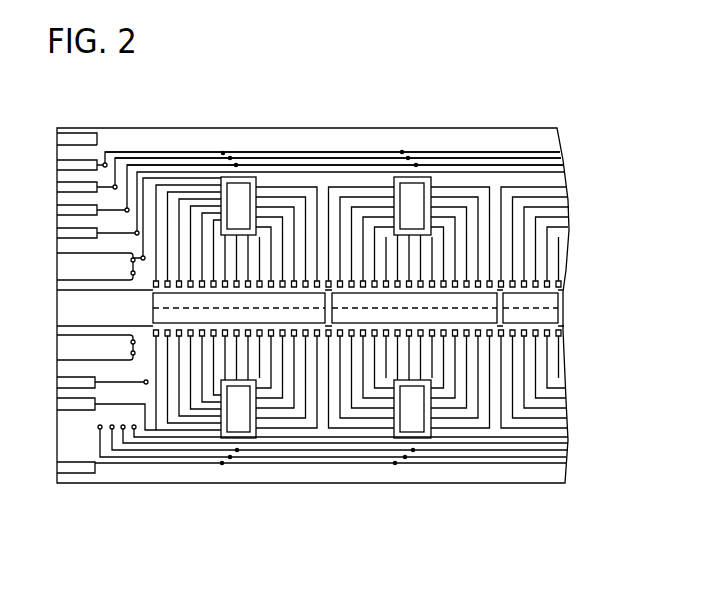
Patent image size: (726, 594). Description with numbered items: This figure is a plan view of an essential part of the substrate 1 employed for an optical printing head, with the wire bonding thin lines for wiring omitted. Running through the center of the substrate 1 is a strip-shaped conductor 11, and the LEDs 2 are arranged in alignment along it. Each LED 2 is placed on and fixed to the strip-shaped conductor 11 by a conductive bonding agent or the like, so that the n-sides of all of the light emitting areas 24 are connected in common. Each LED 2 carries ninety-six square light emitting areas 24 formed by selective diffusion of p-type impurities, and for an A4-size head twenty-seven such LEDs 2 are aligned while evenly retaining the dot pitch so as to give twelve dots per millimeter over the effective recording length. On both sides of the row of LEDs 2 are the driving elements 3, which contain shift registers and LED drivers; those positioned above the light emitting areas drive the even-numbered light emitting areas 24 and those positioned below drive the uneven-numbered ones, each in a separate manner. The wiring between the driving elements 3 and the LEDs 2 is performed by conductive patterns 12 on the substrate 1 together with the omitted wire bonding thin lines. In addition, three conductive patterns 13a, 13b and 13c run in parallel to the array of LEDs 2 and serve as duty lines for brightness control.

The substrate 1 is at (57, 435).
The LED 2 is at (153, 302).
The driving element 3 is at (240, 188).
The strip-shaped conductor 11 is at (77, 312).
The conductive pattern 12 is at (180, 178).
The conductive pattern 13a is at (402, 152).
The conductive pattern 13b is at (408, 158).
The conductive pattern 13c is at (416, 165).
The light emitting area 24 is at (545, 308).